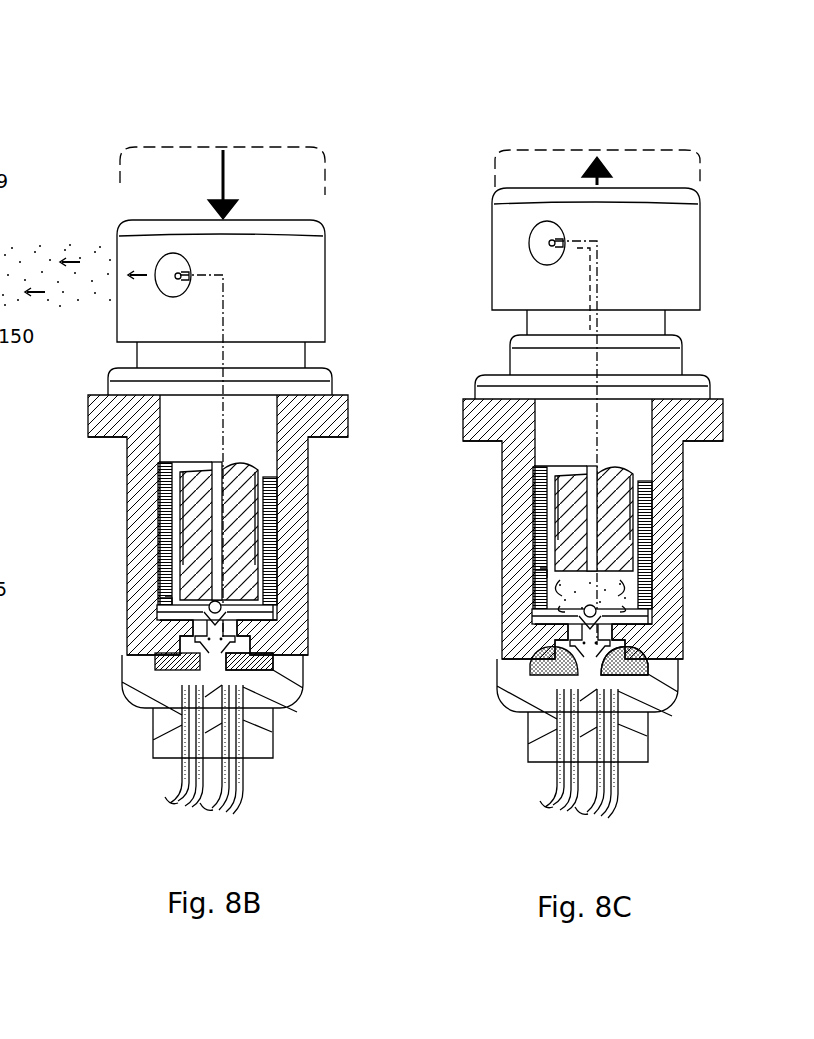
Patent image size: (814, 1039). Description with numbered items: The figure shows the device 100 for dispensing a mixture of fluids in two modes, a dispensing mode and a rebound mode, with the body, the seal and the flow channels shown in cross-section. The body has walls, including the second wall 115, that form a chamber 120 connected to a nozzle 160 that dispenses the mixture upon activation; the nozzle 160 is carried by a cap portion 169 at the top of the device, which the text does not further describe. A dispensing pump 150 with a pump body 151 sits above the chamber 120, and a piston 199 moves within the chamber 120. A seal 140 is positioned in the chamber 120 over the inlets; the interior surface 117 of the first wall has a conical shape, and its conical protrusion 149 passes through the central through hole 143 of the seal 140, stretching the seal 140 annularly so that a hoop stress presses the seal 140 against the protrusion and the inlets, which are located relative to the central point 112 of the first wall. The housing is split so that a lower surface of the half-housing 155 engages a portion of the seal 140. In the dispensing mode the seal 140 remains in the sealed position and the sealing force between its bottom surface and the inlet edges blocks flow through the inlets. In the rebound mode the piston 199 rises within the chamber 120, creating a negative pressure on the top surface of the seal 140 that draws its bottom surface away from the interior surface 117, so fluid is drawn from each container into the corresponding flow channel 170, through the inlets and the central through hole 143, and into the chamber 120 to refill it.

In FIG. 8B, the device 100 is at (57, 116).
In FIG. 8C, the device 100 is at (432, 119).
In FIG. 8B, the nozzle 160 is at (106, 251).
In FIG. 8C, the nozzle 160 is at (483, 251).
In FIG. 8B, the cap body 169 is at (298, 302).
In FIG. 8C, the cap body 169 is at (680, 243).
In FIG. 8B, the dispensing pump 150 is at (333, 359).
In FIG. 8C, the dispensing pump 150 is at (709, 361).
In FIG. 8B, the piston 199 is at (245, 500).
In FIG. 8C, the piston 199 is at (615, 502).
In FIG. 8B, the pump body 151 is at (278, 532).
In FIG. 8C, the pump body 151 is at (655, 533).
In FIG. 8B, the central through hole 143 is at (277, 607).
In FIG. 8C, the central through hole 143 is at (652, 610).
In FIG. 8B, the chamber 120 is at (167, 592).
In FIG. 8C, the chamber 120 is at (547, 570).
In FIG. 8B, the seal 140 is at (163, 647).
In FIG. 8C, the seal 140 is at (540, 647).
In FIG. 8B, the half-housing 155 is at (297, 638).
In FIG. 8C, the half-housing 155 is at (673, 635).
In FIG. 8B, the interior surface 117 is at (278, 672).
In FIG. 8C, the interior surface 117 is at (653, 676).
In FIG. 8B, the second wall 115 is at (138, 663).
In FIG. 8C, the second wall 115 is at (513, 667).
In FIG. 8B, the central point 112 is at (207, 651).
In FIG. 8C, the central point 112 is at (580, 657).
In FIG. 8B, the conical protrusion 149 is at (226, 646).
In FIG. 8C, the conical protrusion 149 is at (603, 652).
In FIG. 8B, the flow channel 170 is at (243, 757).
In FIG. 8C, the flow channel 170 is at (613, 788).